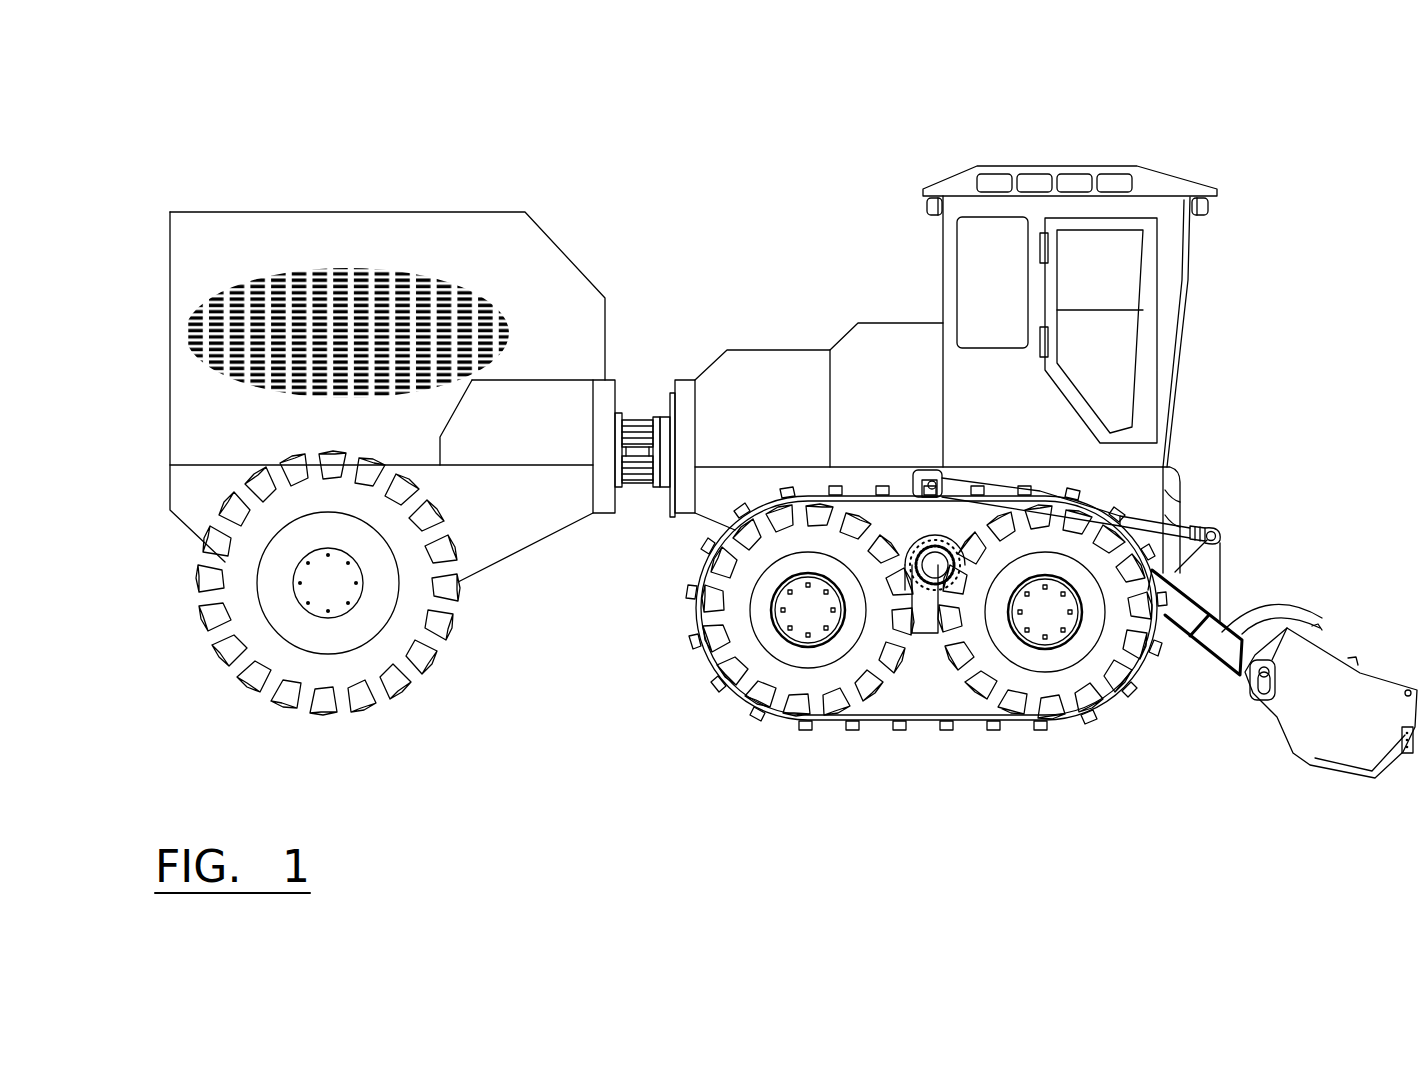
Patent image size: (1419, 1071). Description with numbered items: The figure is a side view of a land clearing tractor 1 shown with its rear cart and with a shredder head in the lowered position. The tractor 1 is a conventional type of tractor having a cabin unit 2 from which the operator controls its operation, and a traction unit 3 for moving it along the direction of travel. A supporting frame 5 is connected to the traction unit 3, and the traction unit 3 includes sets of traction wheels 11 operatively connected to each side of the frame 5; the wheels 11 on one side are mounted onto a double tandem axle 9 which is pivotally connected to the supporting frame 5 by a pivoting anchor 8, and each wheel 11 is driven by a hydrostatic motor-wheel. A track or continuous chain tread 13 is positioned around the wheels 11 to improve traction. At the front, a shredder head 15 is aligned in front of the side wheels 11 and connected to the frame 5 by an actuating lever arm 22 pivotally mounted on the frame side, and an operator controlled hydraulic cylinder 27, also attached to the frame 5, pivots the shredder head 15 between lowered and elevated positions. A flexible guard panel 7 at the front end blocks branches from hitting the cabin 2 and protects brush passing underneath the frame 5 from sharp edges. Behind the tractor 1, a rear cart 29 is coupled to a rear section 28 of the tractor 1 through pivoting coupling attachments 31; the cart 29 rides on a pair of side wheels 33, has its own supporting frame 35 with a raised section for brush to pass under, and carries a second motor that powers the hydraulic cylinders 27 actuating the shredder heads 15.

The land clearing tractor 1 is at (781, 142).
The cabin unit 2 is at (1185, 290).
The traction unit 3 is at (894, 605).
The supporting frame 5 is at (641, 441).
The flexible guard panel 7 is at (1173, 493).
The pivoting anchor 8 is at (917, 533).
The double tandem axle 9 is at (923, 633).
The traction wheel 11 is at (710, 658).
The continuous chain tread 13 is at (990, 733).
The shredder head 15 is at (1298, 763).
The actuating lever arm 22 is at (1213, 650).
The hydraulic cylinder 27 is at (962, 486).
The rear section 28 is at (660, 417).
The rear cart 29 is at (420, 233).
The pivoting coupling attachment 31 is at (636, 420).
The side wheel 33 is at (398, 688).
The supporting frame 35 is at (483, 573).